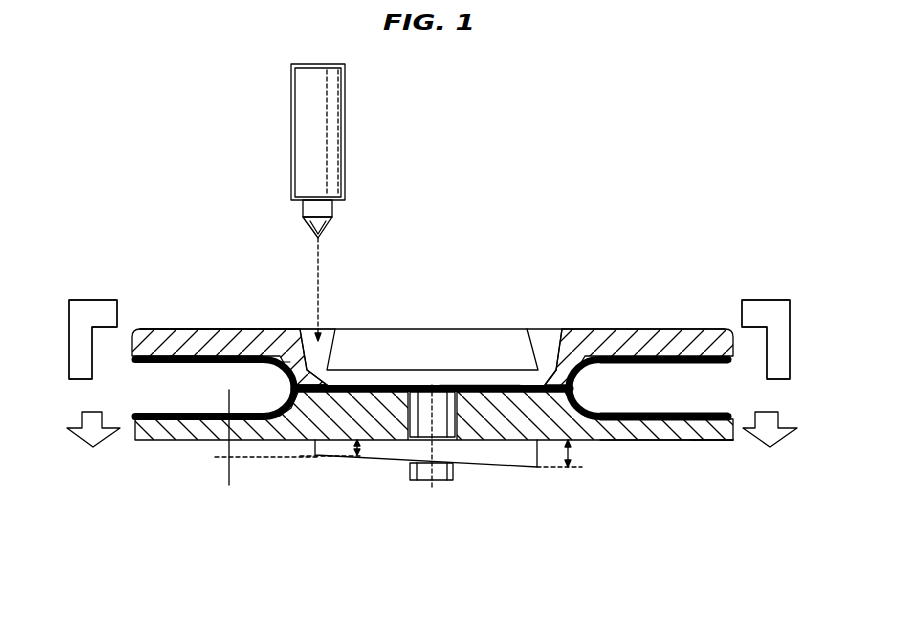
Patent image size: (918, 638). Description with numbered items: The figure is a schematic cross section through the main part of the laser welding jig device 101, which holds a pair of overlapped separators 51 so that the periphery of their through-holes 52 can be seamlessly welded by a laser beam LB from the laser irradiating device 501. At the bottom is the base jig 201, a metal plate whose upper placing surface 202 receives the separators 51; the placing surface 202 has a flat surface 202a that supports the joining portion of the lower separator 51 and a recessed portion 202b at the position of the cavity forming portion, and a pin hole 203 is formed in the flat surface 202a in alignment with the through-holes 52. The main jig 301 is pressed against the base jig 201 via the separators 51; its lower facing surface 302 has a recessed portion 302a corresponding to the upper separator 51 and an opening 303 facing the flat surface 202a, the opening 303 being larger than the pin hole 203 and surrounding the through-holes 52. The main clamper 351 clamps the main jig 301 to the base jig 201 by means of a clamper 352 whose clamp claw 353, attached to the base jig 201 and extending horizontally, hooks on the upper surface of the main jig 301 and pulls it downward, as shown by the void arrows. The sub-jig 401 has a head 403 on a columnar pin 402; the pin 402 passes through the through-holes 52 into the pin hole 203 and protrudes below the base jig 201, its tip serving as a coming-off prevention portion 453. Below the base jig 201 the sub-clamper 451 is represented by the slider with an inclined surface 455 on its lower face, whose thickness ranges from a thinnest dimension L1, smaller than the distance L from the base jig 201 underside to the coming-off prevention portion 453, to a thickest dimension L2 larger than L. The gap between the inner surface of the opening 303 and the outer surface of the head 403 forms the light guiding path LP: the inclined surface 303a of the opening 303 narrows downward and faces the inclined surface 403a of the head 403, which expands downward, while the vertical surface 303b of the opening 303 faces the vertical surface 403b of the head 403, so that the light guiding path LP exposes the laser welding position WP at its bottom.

The laser welding jig device 101 is at (651, 190).
The laser irradiating device 501 is at (291, 107).
The laser beam LB is at (312, 280).
The light guiding path LP is at (310, 327).
The laser welding position WP is at (337, 368).
The sub-jig 401 is at (541, 336).
The pin 402 is at (468, 420).
The head 403 is at (521, 340).
The inclined surface 403a is at (328, 330).
The vertical surface 403b is at (500, 393).
The through-hole 52 is at (497, 385).
The separator 51 is at (700, 443).
The main jig 301 is at (697, 385).
The facing surface 302 is at (144, 355).
The recessed portion 302a is at (192, 355).
The opening 303 is at (550, 378).
The inclined surface 303a is at (313, 327).
The vertical surface 303b is at (275, 380).
The base jig 201 is at (673, 443).
The placing surface 202 is at (629, 445).
The flat surface 202a is at (552, 365).
The recessed portion 202b is at (652, 440).
The pin hole 203 is at (410, 437).
The sub-clamper 451 is at (332, 532).
The coming-off prevention portion 453 is at (445, 481).
The inclined surface 455 is at (418, 481).
The main clamper 351 is at (82, 280).
The clamper 352 is at (66, 318).
The clamp claw 353 is at (107, 332).
The distance L is at (357, 452).
The thickness dimension of thinnest portion L1 is at (222, 457).
The thickness dimension of thickest portion L2 is at (568, 454).